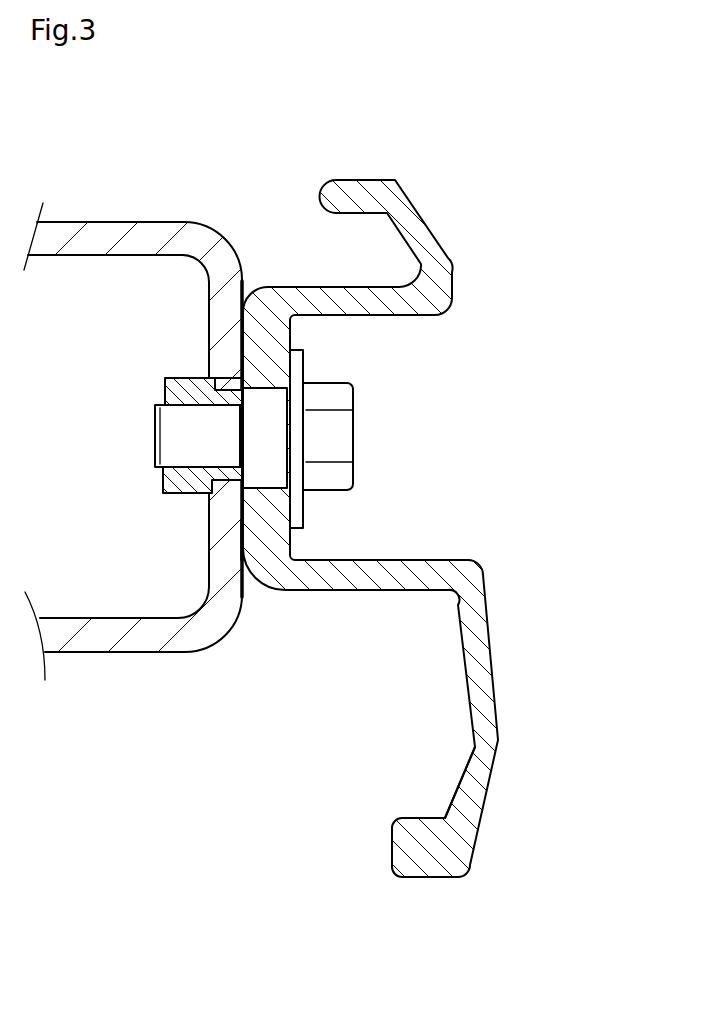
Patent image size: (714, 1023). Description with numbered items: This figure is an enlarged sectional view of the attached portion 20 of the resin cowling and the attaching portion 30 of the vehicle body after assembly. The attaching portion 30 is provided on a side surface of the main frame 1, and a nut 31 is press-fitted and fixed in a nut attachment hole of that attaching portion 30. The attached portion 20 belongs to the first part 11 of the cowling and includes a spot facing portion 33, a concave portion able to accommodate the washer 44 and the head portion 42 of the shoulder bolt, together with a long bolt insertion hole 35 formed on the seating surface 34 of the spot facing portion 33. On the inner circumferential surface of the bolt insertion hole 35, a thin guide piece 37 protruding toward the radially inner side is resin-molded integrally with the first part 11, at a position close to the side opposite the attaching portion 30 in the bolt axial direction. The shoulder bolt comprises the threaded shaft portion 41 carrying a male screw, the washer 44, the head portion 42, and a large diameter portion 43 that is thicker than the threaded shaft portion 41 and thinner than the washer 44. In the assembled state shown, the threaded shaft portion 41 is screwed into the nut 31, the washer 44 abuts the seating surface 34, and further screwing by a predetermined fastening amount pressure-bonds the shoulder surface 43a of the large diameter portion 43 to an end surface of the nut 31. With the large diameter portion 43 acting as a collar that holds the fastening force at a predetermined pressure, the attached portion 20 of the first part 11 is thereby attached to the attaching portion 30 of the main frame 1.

The main frame 1 is at (136, 633).
The attached portion 20 is at (304, 270).
The seating surface 34 is at (293, 336).
The spot facing portion 33 is at (353, 560).
The first part 11 is at (463, 828).
The thin guide piece 37 is at (269, 492).
The attaching portion 30 is at (254, 409).
The bolt insertion hole 35 is at (240, 541).
The nut 31 is at (167, 380).
The shoulder surface 43a is at (201, 377).
The threaded shaft portion 41 is at (187, 436).
The large diameter portion 43 is at (265, 403).
The washer 44 is at (298, 370).
The head portion 42 is at (331, 447).